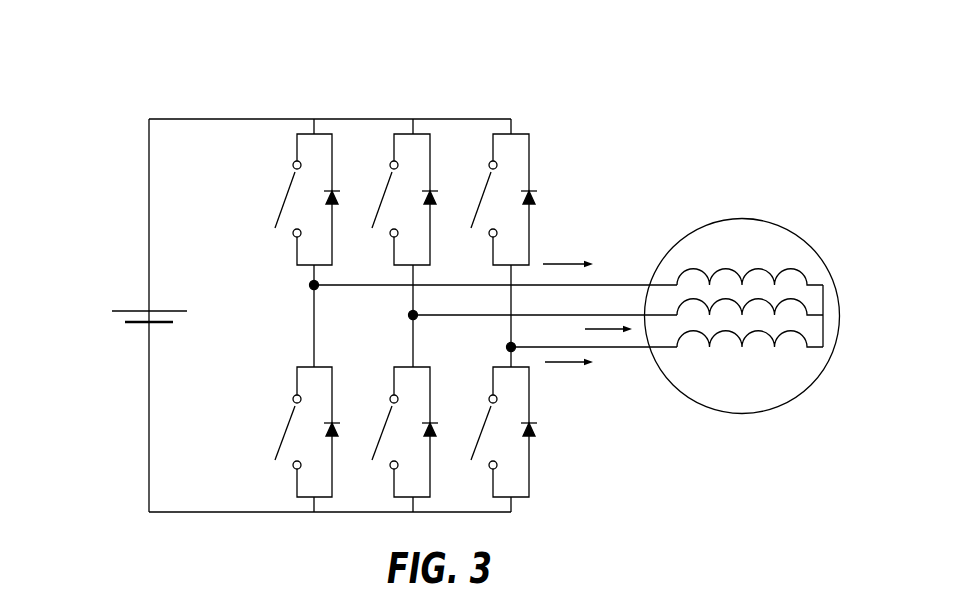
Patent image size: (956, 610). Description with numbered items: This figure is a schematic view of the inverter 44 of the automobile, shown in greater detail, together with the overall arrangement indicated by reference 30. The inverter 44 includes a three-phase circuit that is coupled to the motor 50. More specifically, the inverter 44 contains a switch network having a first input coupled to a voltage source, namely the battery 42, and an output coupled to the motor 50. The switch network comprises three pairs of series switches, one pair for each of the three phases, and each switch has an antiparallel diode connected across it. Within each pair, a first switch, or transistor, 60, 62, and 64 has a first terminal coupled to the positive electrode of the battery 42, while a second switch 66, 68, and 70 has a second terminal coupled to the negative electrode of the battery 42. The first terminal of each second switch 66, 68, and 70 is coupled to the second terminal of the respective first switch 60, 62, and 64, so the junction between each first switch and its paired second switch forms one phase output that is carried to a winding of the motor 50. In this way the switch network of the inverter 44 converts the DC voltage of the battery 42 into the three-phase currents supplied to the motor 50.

The inverter circuit 30 is at (594, 97).
The battery 42 is at (129, 296).
The inverter 44 is at (220, 118).
The motor 50 is at (740, 218).
The first switch 60 is at (274, 190).
The first switch 62 is at (374, 190).
The first switch 64 is at (472, 190).
The second switch 66 is at (276, 422).
The second switch 68 is at (374, 422).
The second switch 70 is at (472, 422).